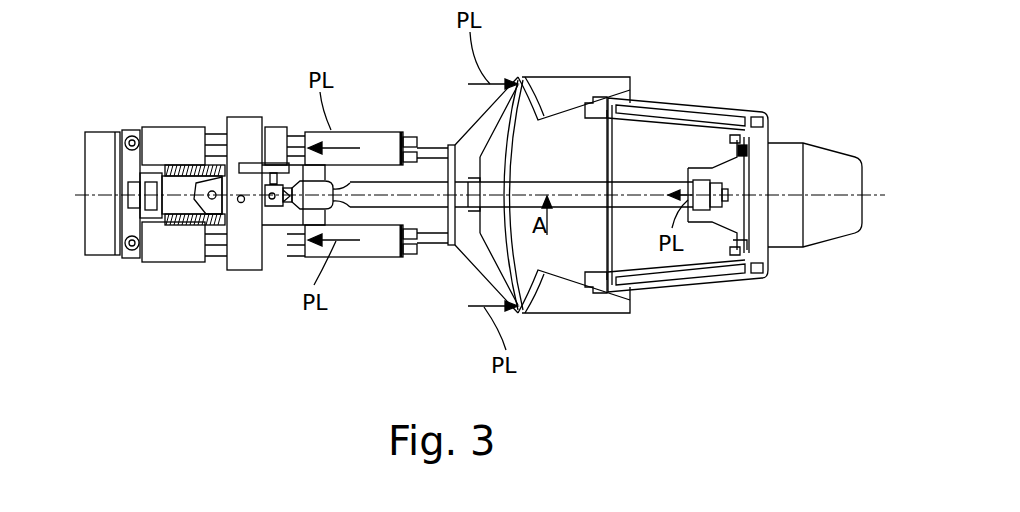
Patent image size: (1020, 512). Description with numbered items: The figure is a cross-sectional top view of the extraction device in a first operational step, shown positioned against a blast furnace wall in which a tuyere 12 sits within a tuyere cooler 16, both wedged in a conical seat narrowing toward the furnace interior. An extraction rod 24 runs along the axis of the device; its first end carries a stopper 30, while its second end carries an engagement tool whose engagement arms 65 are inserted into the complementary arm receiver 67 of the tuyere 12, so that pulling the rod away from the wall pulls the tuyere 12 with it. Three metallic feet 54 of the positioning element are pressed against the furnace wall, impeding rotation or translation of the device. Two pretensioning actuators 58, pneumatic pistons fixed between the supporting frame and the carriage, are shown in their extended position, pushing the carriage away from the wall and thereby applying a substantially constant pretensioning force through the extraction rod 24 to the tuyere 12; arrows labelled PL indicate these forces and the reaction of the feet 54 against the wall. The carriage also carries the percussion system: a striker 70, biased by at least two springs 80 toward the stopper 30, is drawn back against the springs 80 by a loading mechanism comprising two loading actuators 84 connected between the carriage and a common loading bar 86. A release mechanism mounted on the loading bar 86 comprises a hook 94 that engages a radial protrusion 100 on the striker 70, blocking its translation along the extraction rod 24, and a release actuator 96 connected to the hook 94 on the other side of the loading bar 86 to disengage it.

The tuyere 12 is at (794, 236).
The tuyere cooler 16 is at (658, 110).
The extraction rod 24 is at (418, 188).
The stopper 30 is at (128, 206).
The metallic feet 54 is at (490, 266).
The pretensioning actuators 58 is at (382, 244).
The engagement arms 65 is at (718, 172).
The arm receiver 67 is at (743, 156).
The striker 70 is at (180, 183).
The springs 80 is at (197, 226).
The loading actuators 84 is at (157, 251).
The loading bar 86 is at (247, 125).
The hook 94 is at (214, 162).
The release actuator 96 is at (279, 143).
The radial protrusion 100 is at (213, 214).